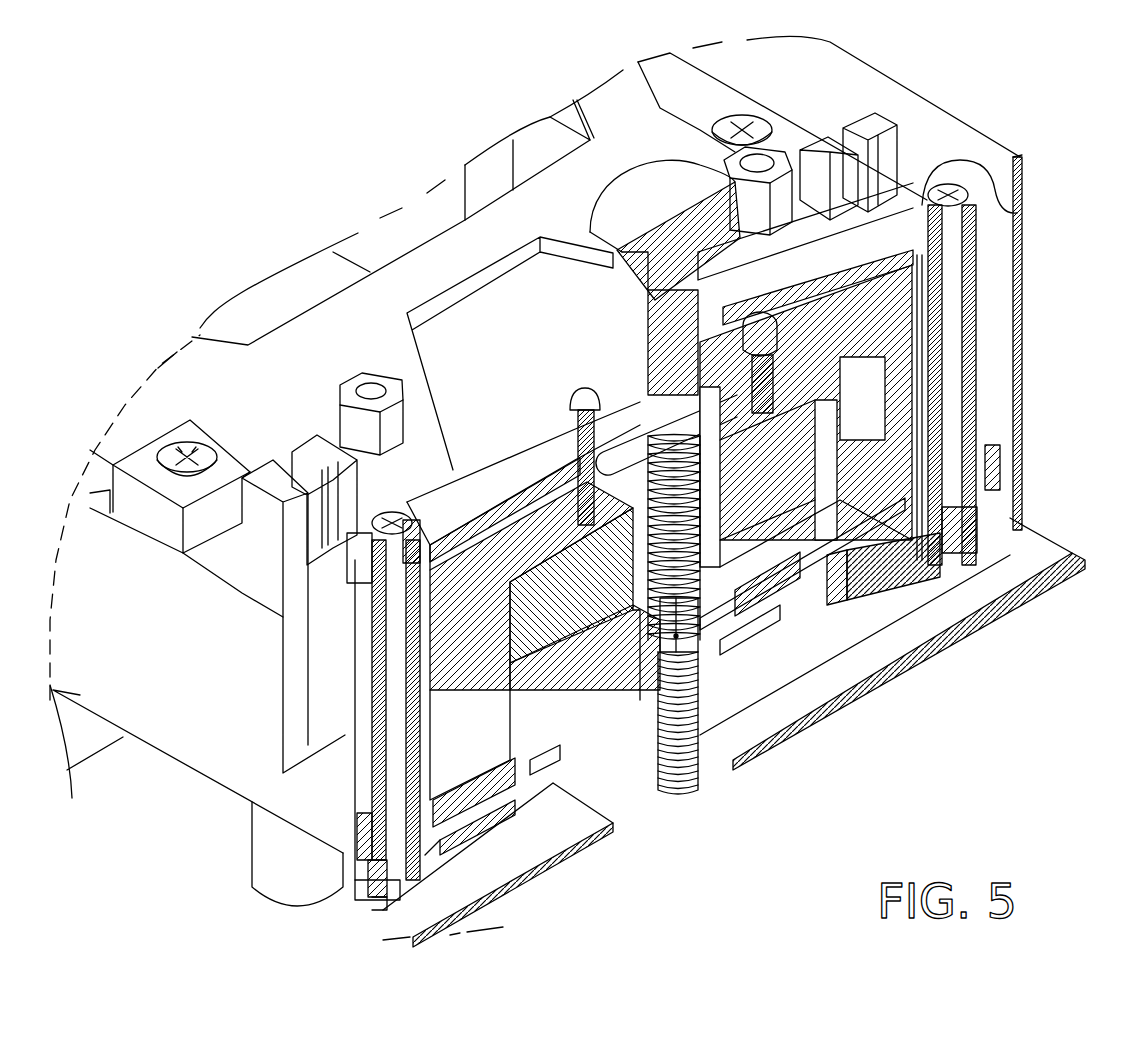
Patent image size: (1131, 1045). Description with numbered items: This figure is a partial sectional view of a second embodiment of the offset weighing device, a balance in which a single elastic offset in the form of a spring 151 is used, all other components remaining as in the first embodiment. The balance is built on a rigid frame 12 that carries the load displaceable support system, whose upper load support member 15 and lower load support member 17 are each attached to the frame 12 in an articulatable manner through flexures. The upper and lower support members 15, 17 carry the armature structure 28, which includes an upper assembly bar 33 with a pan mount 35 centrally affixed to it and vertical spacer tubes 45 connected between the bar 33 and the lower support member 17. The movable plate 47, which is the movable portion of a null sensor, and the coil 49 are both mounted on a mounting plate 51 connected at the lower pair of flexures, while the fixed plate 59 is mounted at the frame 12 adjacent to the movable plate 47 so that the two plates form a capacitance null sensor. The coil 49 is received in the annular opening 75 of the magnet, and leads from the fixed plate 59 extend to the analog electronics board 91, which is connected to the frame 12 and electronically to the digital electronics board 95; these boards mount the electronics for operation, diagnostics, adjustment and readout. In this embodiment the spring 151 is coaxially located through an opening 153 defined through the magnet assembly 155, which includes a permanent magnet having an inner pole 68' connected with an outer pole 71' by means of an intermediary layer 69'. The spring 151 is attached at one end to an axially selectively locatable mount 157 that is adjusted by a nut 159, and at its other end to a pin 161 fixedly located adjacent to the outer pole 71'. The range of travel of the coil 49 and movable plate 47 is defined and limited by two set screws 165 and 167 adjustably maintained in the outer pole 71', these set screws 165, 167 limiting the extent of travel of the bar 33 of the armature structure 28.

The rigid frame 12 is at (180, 750).
The upper load support member 15 is at (470, 223).
The lower load support member 17 is at (470, 865).
The armature structure 28 is at (478, 428).
The upper assembly bar 33 is at (1023, 212).
The pan mount 35 is at (664, 208).
The vertical spacer tubes 45 is at (977, 327).
The movable plate 47 is at (765, 615).
The coil 49 is at (885, 600).
The mounting plate 51 is at (985, 578).
The fixed plate 59 is at (865, 600).
The inner pole 68' is at (534, 800).
The intermediary layer 69' is at (545, 654).
The outer pole 71' is at (909, 478).
The annular opening 75 is at (863, 432).
The analog electronics board 91 is at (955, 600).
The digital electronics board 95 is at (1003, 150).
The elastic offset (spring) 151 is at (737, 660).
The opening 153 is at (745, 660).
The magnet assembly 155 is at (893, 331).
The axially selectively locatable mount 157 is at (680, 790).
The nut 159 is at (693, 752).
The pin 161 is at (605, 405).
The set screw 165 is at (585, 395).
The set screw 167 is at (917, 278).